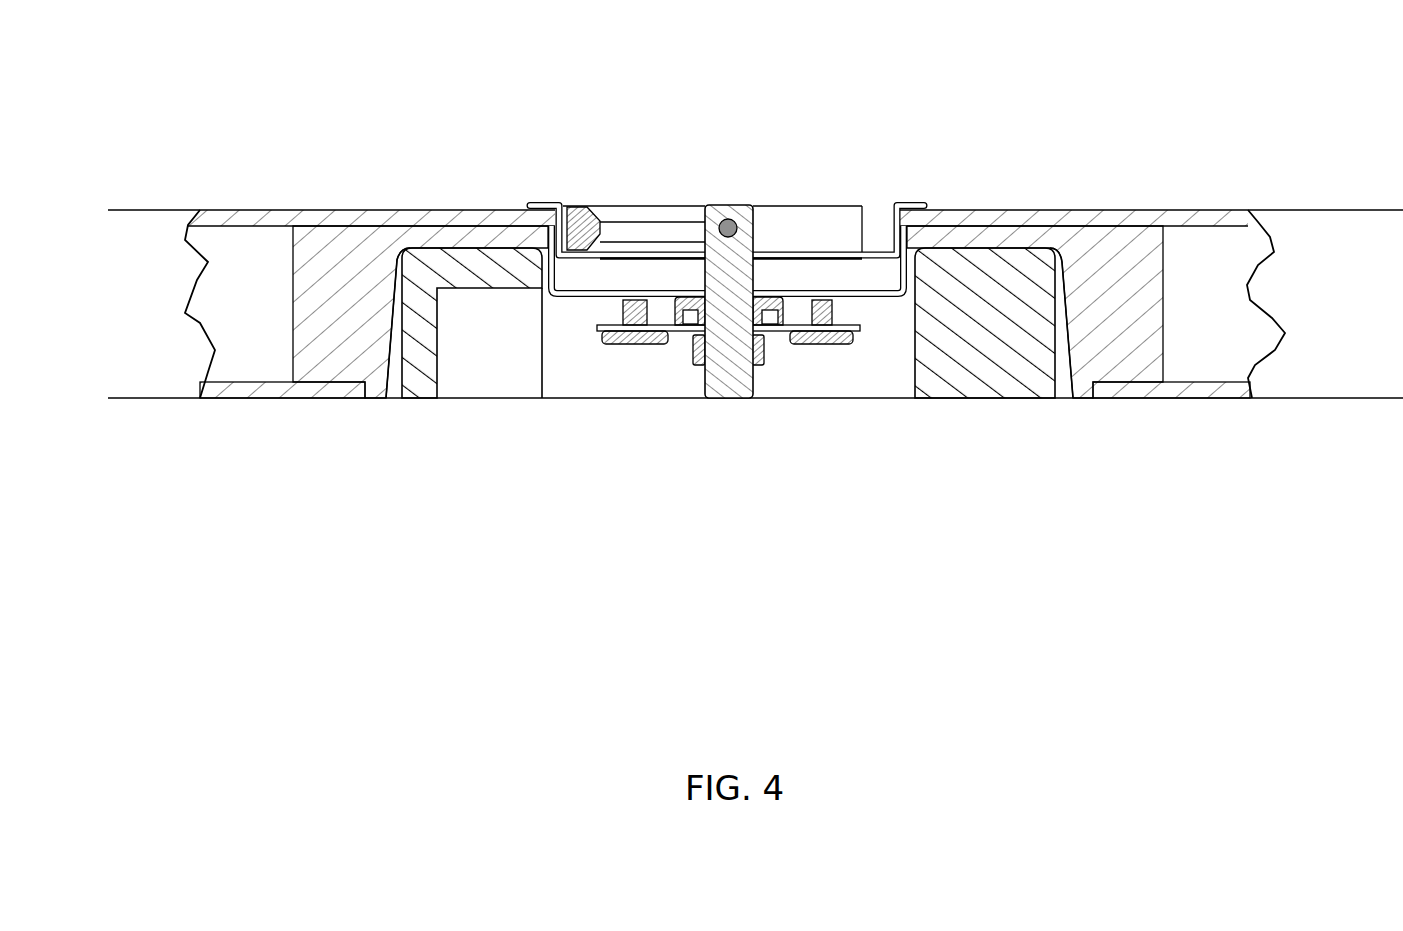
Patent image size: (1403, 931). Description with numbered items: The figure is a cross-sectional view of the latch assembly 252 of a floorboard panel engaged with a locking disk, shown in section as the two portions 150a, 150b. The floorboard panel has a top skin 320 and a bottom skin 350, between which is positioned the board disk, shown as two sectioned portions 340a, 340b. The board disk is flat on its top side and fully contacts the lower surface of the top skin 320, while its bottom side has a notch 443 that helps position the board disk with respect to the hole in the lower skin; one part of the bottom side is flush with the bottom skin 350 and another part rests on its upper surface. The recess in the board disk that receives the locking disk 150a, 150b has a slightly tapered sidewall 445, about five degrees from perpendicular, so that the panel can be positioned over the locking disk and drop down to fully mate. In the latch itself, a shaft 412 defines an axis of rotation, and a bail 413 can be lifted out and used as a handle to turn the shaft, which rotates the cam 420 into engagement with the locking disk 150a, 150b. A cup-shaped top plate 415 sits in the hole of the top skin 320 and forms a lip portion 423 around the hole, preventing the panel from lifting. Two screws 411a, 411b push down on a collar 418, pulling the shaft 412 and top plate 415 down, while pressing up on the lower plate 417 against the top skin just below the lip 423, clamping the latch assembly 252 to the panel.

The latch assembly 252 is at (399, 122).
The top skin 320 is at (1114, 210).
The board disk 340a is at (335, 328).
The board disk 340b is at (1132, 318).
The bottom skin 350 is at (1223, 399).
The sidewall 445 is at (389, 399).
The notch 443 is at (1094, 400).
The locking disk 150a is at (420, 353).
The locking disk 150b is at (1005, 373).
The lower plate 417 is at (878, 298).
The top plate 415 is at (865, 256).
The lip portion 423 is at (905, 204).
The bail 413 is at (593, 215).
The screw 411a is at (645, 346).
The screw 411b is at (850, 346).
The cam 420 is at (783, 315).
The collar 418 is at (700, 366).
The shaft 412 is at (718, 212).